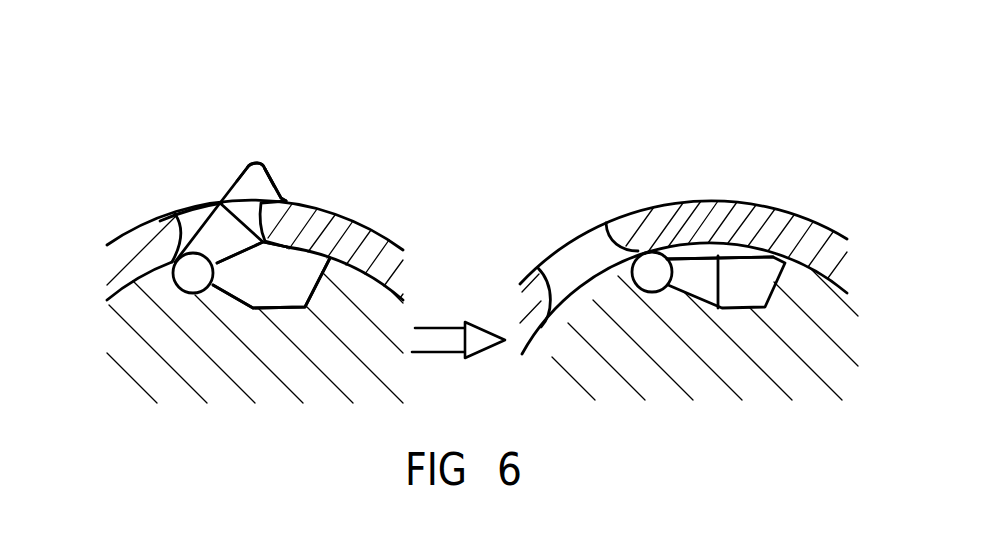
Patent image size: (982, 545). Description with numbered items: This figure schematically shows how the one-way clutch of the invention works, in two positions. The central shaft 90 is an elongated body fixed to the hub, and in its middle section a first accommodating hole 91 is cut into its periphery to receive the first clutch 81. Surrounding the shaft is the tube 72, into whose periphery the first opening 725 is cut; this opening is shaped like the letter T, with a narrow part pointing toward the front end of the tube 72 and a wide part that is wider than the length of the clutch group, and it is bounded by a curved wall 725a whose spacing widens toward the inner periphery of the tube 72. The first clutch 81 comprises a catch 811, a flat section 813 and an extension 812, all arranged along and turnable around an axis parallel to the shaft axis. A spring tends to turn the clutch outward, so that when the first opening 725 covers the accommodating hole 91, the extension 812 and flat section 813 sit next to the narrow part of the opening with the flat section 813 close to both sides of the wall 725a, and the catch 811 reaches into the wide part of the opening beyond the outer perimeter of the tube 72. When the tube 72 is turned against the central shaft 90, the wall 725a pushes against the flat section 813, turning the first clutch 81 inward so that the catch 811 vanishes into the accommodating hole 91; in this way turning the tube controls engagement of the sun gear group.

The tube 72 is at (118, 252).
The first opening 725 is at (188, 216).
The curved wall 725a is at (290, 240).
The first clutch 81 is at (257, 183).
The catch 811 is at (277, 183).
The extension 812 is at (165, 226).
The flat section 813 is at (242, 212).
The first accommodating hole 91 is at (290, 287).
The central shaft 90 is at (192, 330).